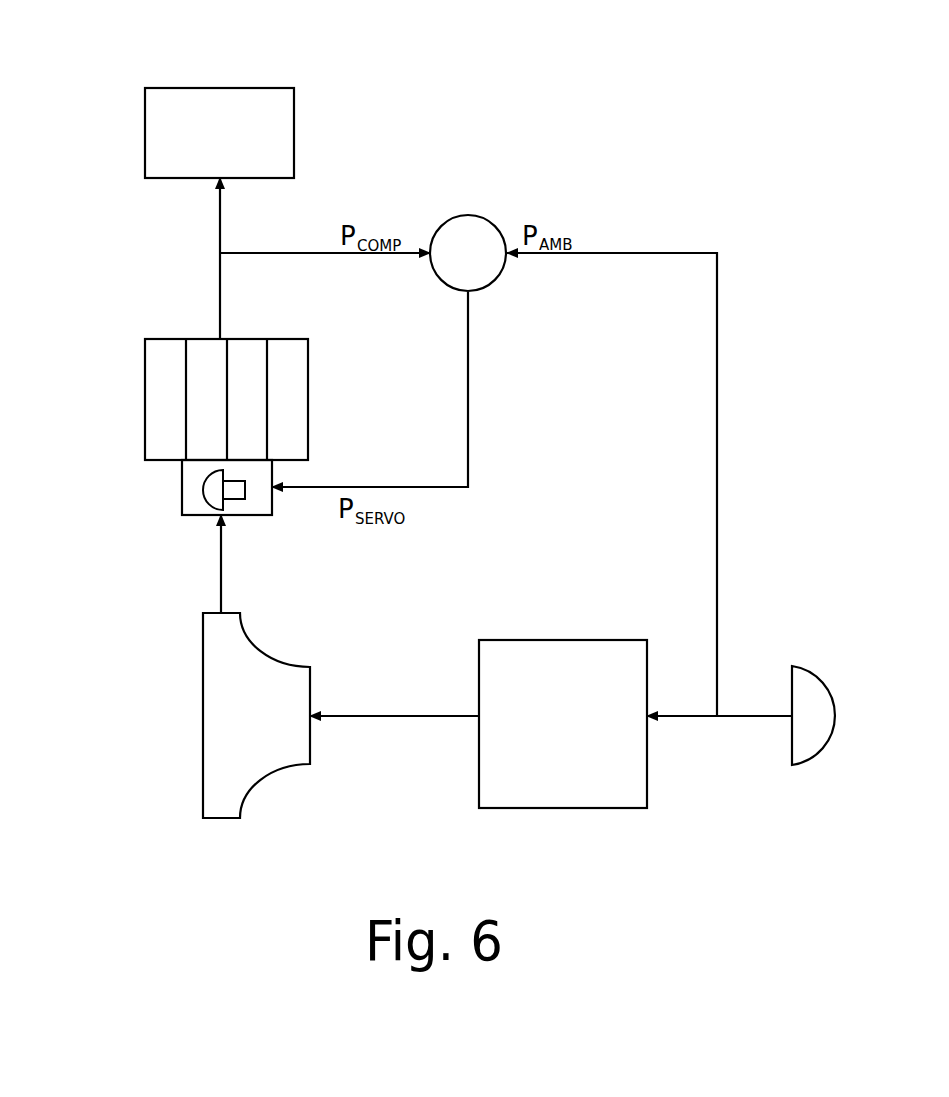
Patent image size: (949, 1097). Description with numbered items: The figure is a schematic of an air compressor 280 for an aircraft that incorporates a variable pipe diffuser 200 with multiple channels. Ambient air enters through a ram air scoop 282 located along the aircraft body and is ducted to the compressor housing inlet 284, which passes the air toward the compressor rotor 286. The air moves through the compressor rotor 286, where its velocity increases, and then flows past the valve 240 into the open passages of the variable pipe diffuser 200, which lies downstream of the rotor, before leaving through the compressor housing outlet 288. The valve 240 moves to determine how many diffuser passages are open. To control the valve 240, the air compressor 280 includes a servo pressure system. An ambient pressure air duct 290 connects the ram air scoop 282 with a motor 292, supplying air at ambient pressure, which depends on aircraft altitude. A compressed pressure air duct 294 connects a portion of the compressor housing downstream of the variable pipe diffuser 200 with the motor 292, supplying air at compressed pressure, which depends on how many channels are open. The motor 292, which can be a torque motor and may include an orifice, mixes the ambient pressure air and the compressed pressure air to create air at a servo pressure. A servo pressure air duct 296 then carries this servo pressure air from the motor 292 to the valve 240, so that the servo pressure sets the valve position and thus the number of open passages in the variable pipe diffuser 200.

The air compressor 280 is at (741, 103).
The ram air scoop 282 is at (817, 670).
The compressor housing inlet 284 is at (563, 724).
The compressor rotor 286 is at (256, 715).
The compressor housing outlet 288 is at (219, 133).
The ambient pressure air duct 290 is at (717, 352).
The motor 292 is at (468, 215).
The compressed pressure air duct 294 is at (320, 253).
The servo pressure air duct 296 is at (472, 378).
The variable pipe diffuser 200 is at (145, 387).
The valve 240 is at (182, 483).